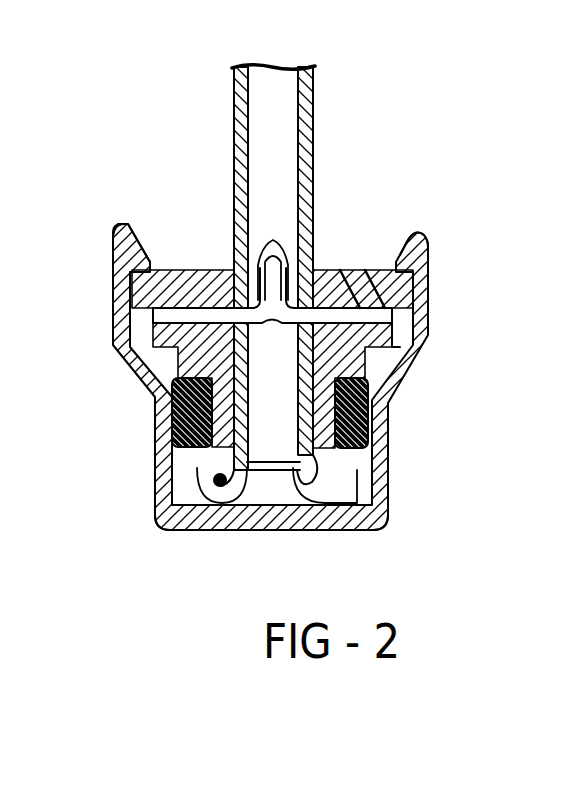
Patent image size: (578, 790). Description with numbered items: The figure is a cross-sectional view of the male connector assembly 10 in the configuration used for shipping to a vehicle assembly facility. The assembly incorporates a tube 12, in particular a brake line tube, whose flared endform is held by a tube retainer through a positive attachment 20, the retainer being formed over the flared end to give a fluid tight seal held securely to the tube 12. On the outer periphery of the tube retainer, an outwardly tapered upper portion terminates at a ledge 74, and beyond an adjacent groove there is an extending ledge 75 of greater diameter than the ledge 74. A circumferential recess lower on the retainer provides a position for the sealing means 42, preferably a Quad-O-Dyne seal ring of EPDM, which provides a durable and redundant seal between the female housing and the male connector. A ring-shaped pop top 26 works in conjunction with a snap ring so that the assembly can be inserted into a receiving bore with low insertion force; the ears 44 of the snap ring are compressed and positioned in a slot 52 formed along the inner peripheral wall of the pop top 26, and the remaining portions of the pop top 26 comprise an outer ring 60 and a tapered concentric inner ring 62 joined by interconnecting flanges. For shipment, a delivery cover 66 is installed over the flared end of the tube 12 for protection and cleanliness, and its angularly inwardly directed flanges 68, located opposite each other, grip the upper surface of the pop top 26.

The male connector assembly 10 is at (310, 297).
The tube 12 is at (313, 141).
The positive attachment 20 is at (218, 481).
The pop top 26 is at (337, 268).
The sealing means 42 is at (375, 415).
The ears 44 is at (285, 245).
The slot 52 is at (243, 258).
The outer ring 60 is at (430, 266).
The tapered concentric inner ring 62 is at (200, 263).
The delivery cover 66 is at (158, 449).
The angularly inwardly directed flanges 68 is at (140, 233).
The ledge 74 is at (372, 270).
The extending ledge 75 is at (395, 322).